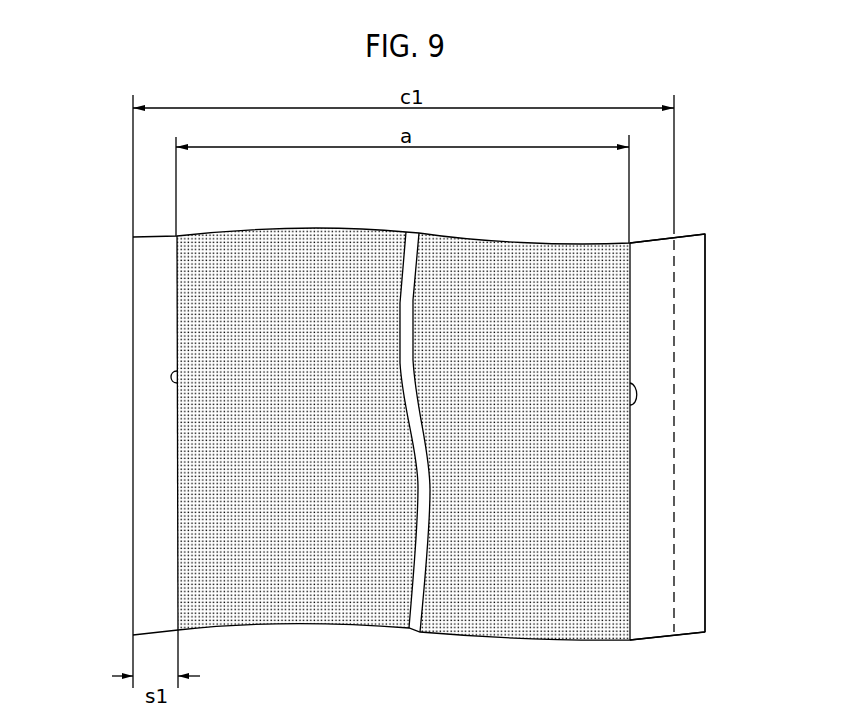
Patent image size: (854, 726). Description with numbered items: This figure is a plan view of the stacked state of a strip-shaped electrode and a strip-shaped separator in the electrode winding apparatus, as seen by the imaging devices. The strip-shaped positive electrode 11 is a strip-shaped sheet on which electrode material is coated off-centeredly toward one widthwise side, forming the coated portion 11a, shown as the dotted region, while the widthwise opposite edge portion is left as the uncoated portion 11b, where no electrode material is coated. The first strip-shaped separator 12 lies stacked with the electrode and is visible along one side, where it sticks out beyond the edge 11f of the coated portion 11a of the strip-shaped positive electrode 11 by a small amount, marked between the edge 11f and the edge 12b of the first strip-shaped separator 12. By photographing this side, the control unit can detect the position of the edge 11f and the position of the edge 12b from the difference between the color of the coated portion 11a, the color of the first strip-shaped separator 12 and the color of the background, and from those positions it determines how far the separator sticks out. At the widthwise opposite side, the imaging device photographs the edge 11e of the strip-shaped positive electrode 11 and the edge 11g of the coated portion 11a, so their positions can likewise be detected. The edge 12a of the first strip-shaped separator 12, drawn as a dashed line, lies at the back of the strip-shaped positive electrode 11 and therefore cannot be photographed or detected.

The strip-shaped positive electrode 11 is at (495, 408).
The coated portion 11a is at (544, 253).
The uncoated portion 11b is at (698, 468).
The edge of the strip-shaped positive electrode 11e is at (704, 395).
The edge of the strip-shaped positive electrode 11f is at (177, 377).
The edge of the coated portion 11g is at (630, 405).
The first strip-shaped separator 12 is at (405, 434).
The edge of the first strip-shaped separator 12a is at (674, 520).
The edge of the first strip-shaped separator 12b is at (133, 398).